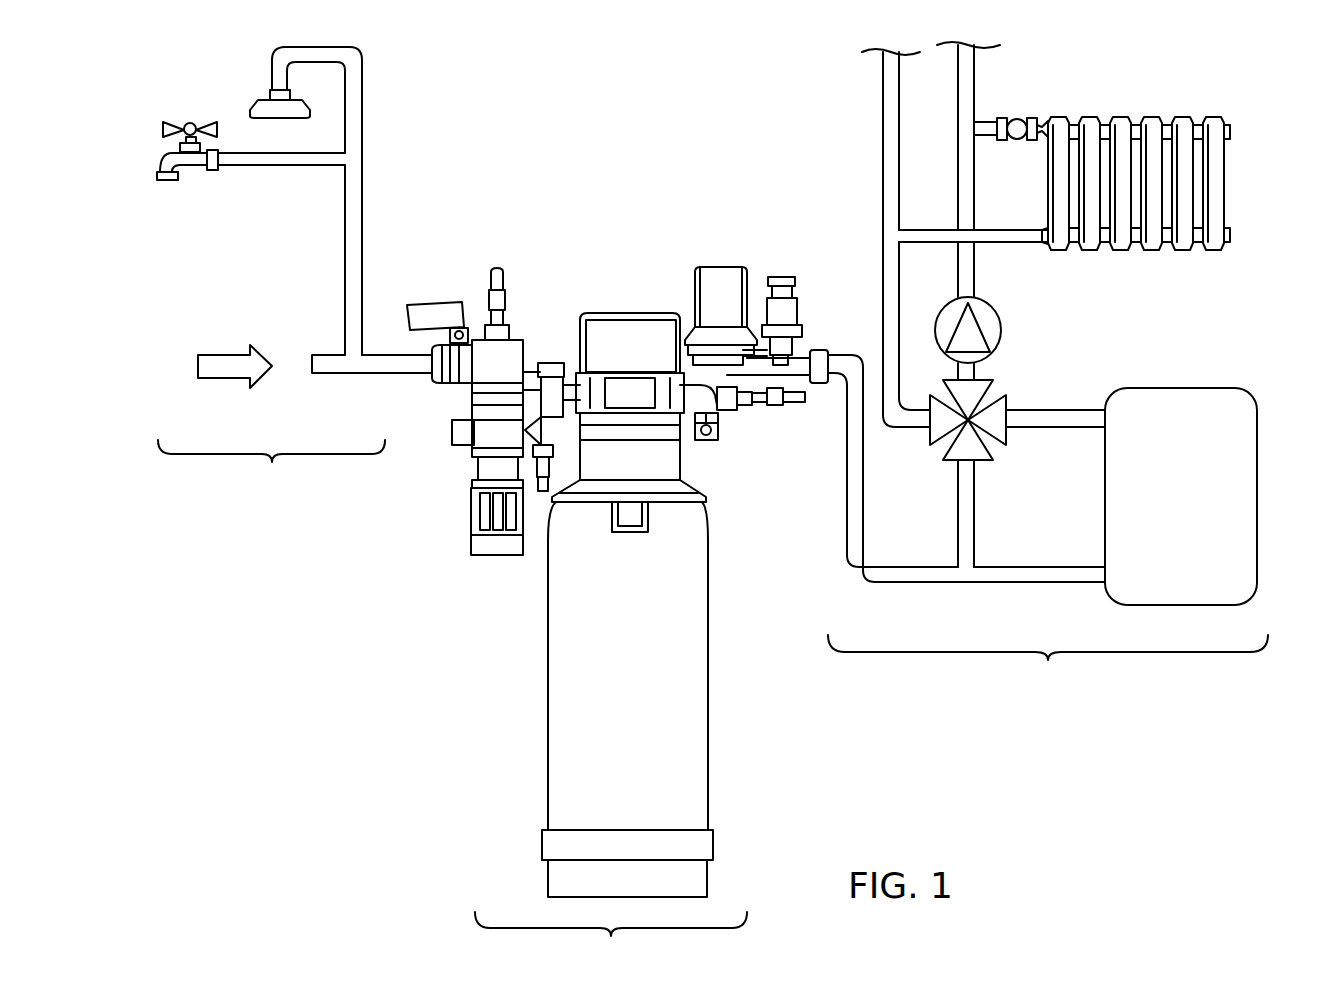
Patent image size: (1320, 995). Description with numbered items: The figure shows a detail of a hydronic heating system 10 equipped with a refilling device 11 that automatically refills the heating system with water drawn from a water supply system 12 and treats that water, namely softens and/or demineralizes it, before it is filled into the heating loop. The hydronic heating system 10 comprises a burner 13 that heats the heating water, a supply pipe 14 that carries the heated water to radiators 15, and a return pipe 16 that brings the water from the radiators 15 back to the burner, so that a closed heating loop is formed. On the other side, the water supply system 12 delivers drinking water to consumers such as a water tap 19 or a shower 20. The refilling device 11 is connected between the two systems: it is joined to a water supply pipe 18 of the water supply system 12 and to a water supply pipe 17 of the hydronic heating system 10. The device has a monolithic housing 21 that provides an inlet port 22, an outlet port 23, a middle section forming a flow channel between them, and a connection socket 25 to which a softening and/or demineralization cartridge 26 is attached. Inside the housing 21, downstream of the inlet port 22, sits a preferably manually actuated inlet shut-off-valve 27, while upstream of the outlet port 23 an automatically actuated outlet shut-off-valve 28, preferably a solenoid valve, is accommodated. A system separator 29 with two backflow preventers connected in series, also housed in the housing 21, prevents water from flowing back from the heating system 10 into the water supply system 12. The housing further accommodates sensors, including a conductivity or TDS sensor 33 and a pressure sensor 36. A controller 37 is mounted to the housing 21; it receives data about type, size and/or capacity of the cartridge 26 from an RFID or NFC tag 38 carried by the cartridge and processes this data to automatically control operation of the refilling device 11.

The hydronic heating system 10 is at (1048, 666).
The refilling device 11 is at (611, 940).
The water supply system 12 is at (271, 421).
The burner 13 is at (1212, 405).
The supply pipe 14 is at (976, 274).
The radiators 15 is at (1215, 181).
The return pipe 16 is at (883, 172).
The water supply pipe of the hydronic heating system 17 is at (852, 546).
The water supply pipe of the water supply system 18 is at (376, 375).
The water tap 19 is at (258, 167).
The shower 20 is at (282, 67).
The monolithic housing 21 is at (565, 360).
The inlet port 22 is at (432, 382).
The outlet port 23 is at (822, 358).
The connection socket 25 is at (645, 457).
The softening and/or demineralization cartridge 26 is at (560, 786).
The inlet shut-off-valve 27 is at (442, 300).
The automatically actuated outlet shut-off-valve 28 is at (712, 265).
The system separator 29 is at (455, 540).
The second conductivity or TDS sensor 33 is at (772, 406).
The pressure sensor 36 is at (782, 268).
The controller 37 is at (640, 333).
The RFID or NFC tag 38 is at (632, 538).